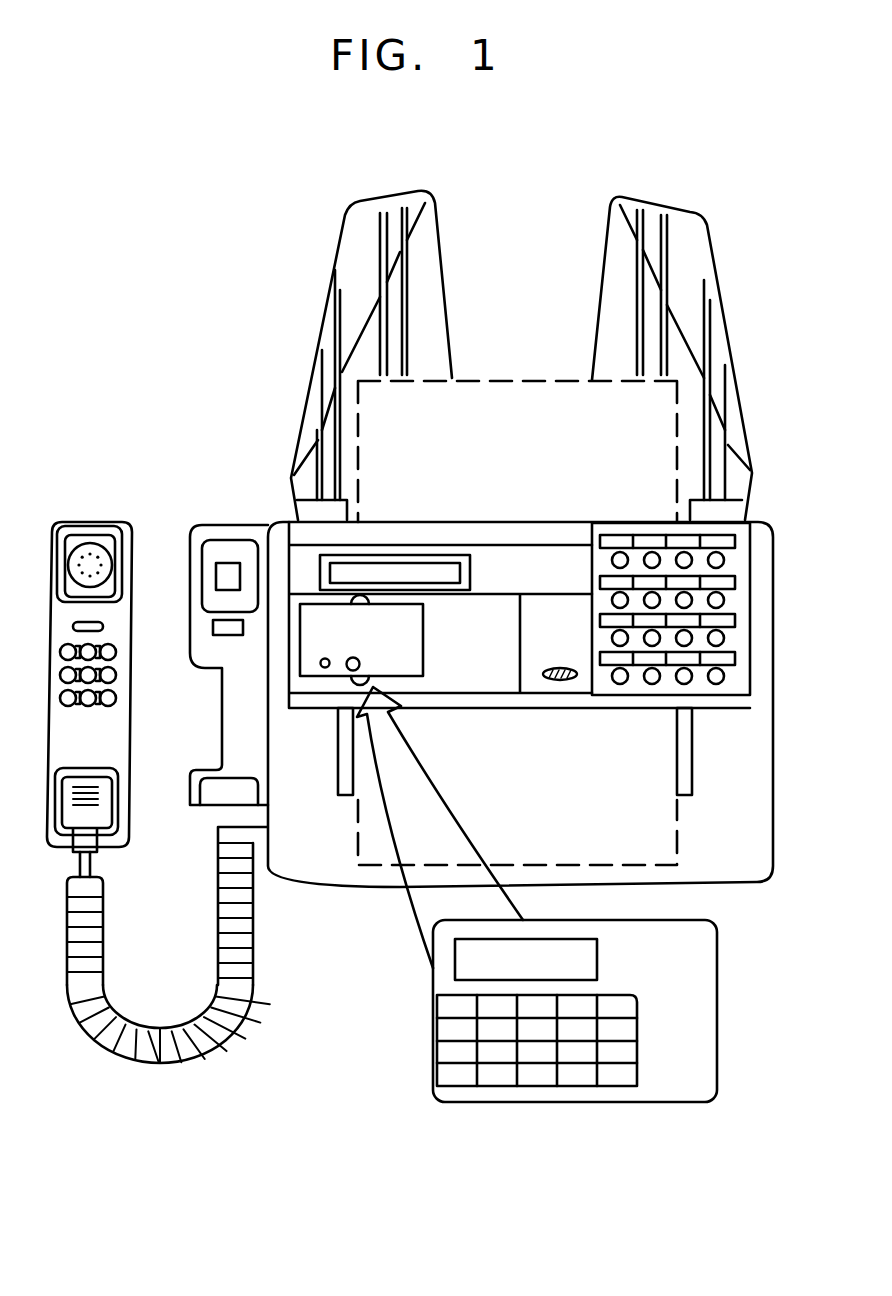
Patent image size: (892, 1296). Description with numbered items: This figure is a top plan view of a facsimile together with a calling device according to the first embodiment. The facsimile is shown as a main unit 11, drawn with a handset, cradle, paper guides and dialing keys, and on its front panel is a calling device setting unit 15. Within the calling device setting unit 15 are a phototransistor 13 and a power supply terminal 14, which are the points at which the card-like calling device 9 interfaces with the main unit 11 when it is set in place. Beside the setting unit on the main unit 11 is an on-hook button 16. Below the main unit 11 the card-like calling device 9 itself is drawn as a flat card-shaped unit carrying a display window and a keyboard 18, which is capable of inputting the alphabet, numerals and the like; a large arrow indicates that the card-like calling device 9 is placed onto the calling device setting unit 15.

The card-like calling device 9 is at (720, 1057).
The main unit 11 is at (737, 880).
The phototransistor 13 is at (327, 658).
The power supply terminal 14 is at (359, 661).
The calling device setting unit 15 is at (334, 678).
The on-hook button 16 is at (558, 680).
The keyboard 18 is at (638, 1080).